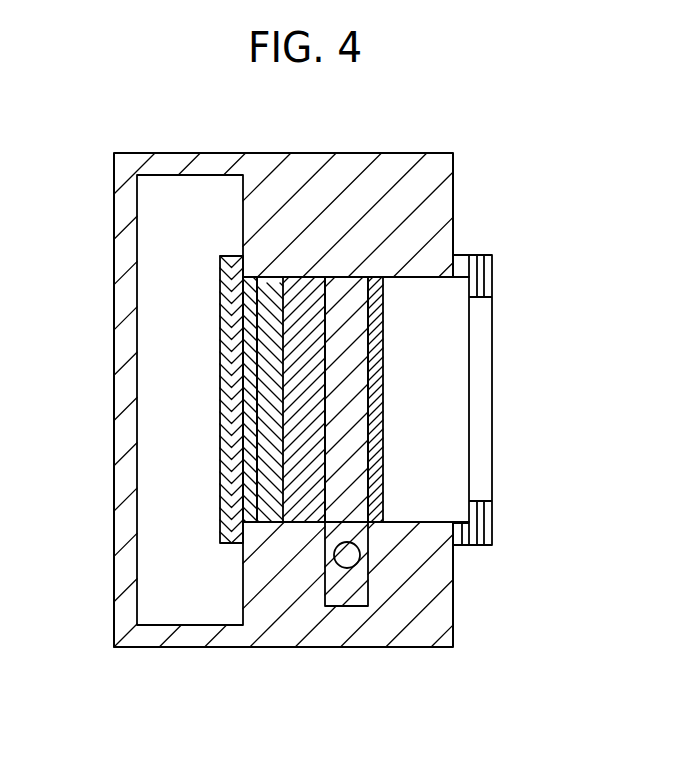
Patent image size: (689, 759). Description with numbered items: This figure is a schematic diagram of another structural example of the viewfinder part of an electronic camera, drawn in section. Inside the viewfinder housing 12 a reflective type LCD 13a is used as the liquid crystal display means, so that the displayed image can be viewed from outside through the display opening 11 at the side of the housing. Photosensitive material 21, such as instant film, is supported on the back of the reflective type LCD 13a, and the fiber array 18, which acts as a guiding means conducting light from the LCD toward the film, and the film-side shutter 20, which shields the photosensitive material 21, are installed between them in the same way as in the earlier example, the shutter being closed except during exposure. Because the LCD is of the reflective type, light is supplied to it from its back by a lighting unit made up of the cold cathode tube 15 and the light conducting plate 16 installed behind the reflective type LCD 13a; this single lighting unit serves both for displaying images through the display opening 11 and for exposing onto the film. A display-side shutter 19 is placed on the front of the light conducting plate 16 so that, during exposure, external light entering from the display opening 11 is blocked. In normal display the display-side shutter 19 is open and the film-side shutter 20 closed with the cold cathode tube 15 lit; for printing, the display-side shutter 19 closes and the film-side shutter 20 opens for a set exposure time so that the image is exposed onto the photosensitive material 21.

The display opening 11 is at (492, 397).
The viewfinder housing 12 is at (326, 190).
The reflective type LCD 13a is at (303, 515).
The cold cathode tube 15 is at (352, 560).
The light conducting plate 16 is at (347, 460).
The fiber array 18 is at (270, 440).
The display-side shutter 19 is at (383, 327).
The film-side shutter 20 is at (248, 367).
The photosensitive material 21 is at (223, 315).